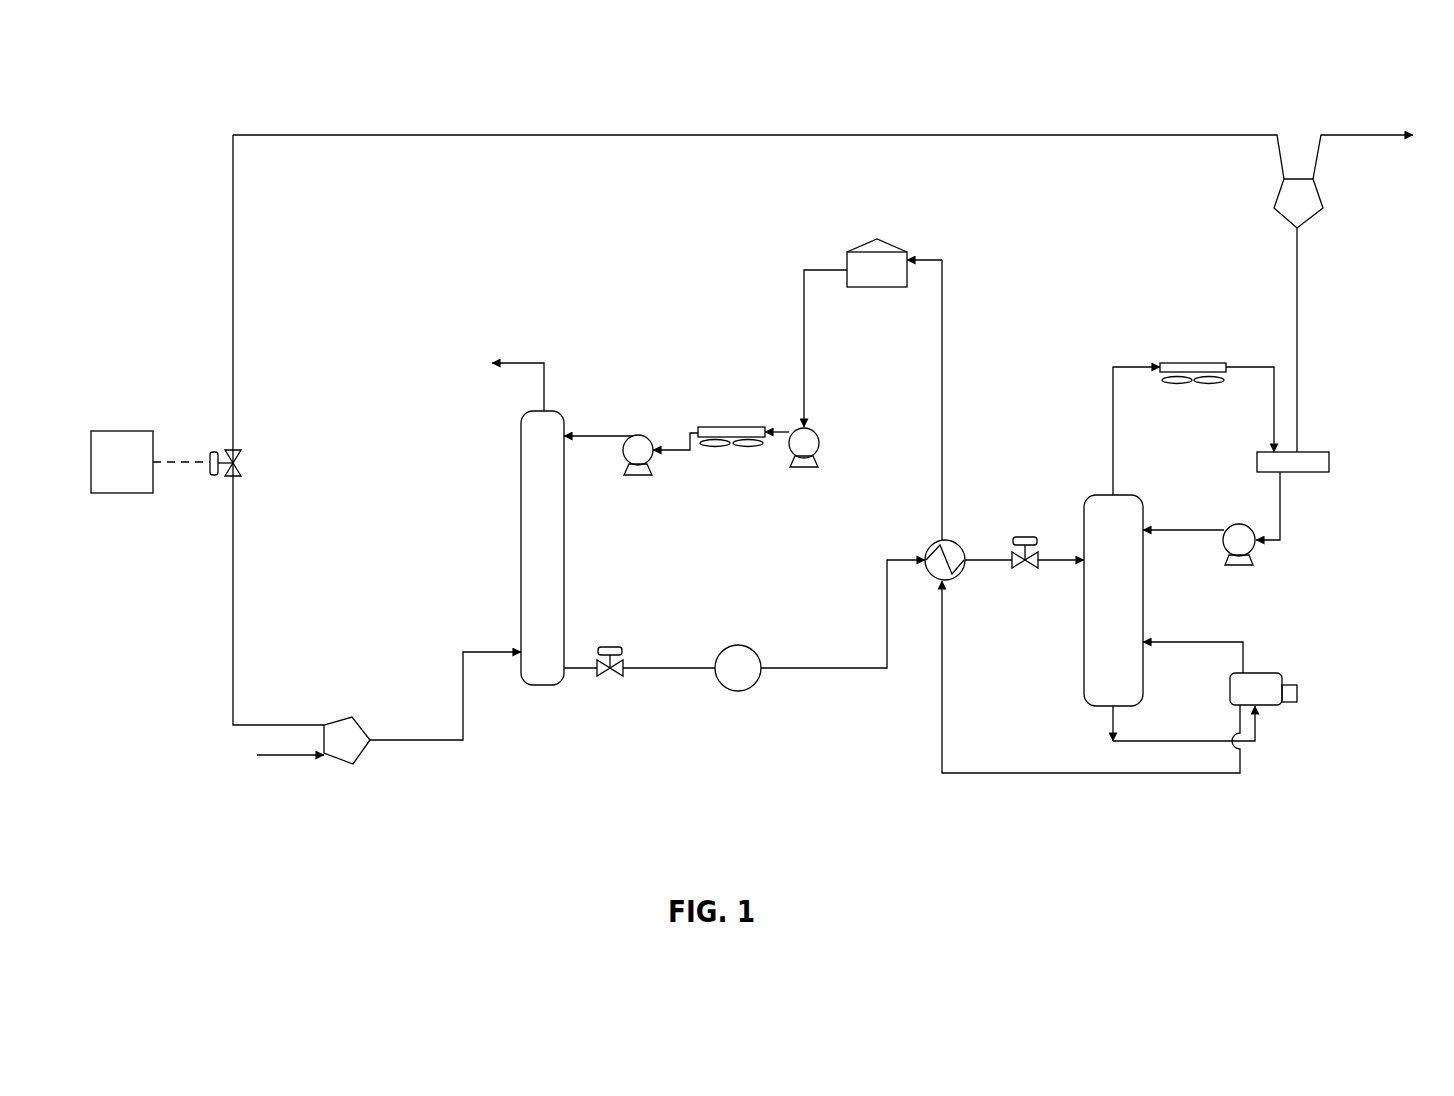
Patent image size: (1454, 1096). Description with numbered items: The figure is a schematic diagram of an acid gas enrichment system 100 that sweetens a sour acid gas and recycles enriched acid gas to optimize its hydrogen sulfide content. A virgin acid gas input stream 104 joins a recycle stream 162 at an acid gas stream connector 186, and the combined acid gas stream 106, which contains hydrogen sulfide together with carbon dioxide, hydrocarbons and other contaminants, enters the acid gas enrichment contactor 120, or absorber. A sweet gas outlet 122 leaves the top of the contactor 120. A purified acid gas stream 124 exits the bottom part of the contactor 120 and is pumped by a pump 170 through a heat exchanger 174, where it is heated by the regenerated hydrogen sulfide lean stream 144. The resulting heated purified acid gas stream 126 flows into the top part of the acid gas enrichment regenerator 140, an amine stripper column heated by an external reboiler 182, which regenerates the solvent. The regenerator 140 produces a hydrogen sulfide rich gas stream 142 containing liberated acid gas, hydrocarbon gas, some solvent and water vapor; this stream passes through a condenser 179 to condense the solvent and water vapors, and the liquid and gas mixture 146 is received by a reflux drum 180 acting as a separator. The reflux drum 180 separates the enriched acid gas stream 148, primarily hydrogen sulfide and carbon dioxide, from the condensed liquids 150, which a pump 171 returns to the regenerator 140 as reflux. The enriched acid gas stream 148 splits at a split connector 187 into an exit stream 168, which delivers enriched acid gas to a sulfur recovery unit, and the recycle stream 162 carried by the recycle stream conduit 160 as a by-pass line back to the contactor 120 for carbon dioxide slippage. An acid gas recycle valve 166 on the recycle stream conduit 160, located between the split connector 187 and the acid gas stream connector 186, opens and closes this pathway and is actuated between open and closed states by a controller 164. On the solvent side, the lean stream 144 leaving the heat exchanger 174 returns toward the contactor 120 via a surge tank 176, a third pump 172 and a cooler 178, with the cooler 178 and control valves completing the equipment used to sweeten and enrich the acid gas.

The system 100 is at (972, 62).
The acid gas input stream 104 is at (272, 757).
The acid gas stream 106 is at (447, 742).
The acid gas enrichment contactor 120 is at (521, 512).
The sweet gas outlet 122 is at (525, 360).
The purified acid gas stream 124 is at (582, 672).
The heated purified acid gas stream 126 is at (980, 563).
The acid gas enrichment regenerator 140 is at (1084, 680).
The hydrogen sulfide rich gas stream 142 is at (1113, 362).
The hydrogen sulfide lean stream 144 is at (1155, 745).
The liquid and gas mixture 146 is at (1255, 365).
The enriched acid gas stream 148 is at (1297, 360).
The condensed liquids 150 is at (1283, 530).
The recycle stream conduit 160 is at (452, 135).
The recycle stream 162 is at (233, 690).
The controller 164 is at (120, 493).
The acid gas recycle valve 166 is at (217, 480).
The exit stream 168 is at (1331, 135).
The pump 170 is at (743, 692).
The pump 171 is at (1262, 558).
The pump 172 is at (638, 478).
The heat exchanger 174 is at (947, 540).
The surge tank 176 is at (863, 250).
The cooler 178 is at (733, 425).
The condenser 179 is at (1183, 362).
The reflux drum 180 is at (1329, 462).
The acid gas enrichment reboiler 182 is at (1298, 692).
The acid gas stream connector 186 is at (337, 720).
The split connector 187 is at (1302, 208).